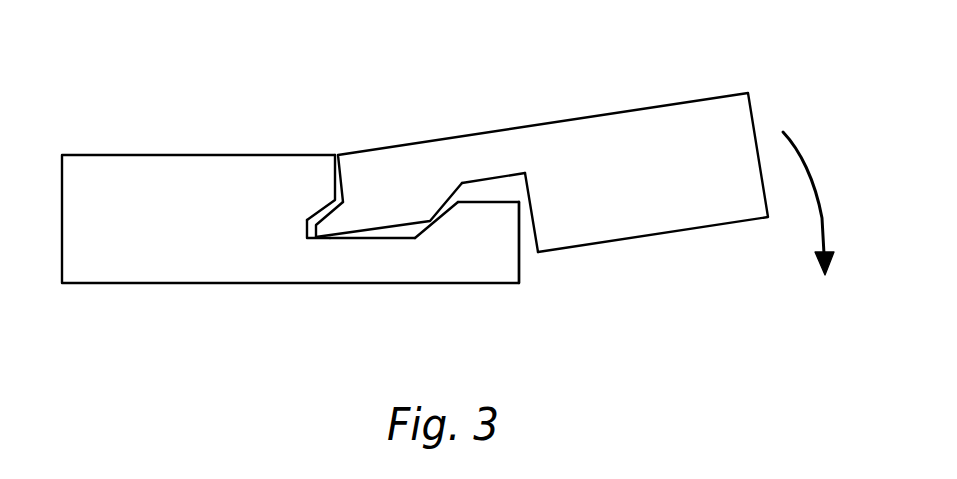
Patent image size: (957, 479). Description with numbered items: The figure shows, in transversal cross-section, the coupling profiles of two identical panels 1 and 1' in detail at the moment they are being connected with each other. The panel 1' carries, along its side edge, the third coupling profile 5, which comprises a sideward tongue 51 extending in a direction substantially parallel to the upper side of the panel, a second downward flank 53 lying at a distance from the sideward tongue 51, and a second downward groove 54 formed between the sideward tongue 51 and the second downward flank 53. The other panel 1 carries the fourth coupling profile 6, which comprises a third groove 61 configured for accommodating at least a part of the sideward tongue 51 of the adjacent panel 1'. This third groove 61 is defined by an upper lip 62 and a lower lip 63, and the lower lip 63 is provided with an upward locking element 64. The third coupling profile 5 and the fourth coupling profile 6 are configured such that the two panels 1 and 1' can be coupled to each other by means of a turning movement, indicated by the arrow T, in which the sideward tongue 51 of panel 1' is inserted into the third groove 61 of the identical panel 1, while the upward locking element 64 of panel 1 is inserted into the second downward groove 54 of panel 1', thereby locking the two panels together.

The panel 1 is at (290, 176).
The second identical panel 1' is at (553, 132).
The third coupling profile 5 is at (400, 165).
The sideward tongue 51 is at (368, 213).
The second downward flank 53 is at (527, 202).
The second downward groove 54 is at (497, 192).
The fourth coupling profile 6 is at (475, 262).
The third groove 61 is at (307, 228).
The upper lip 62 is at (310, 187).
The lower lip 63 is at (493, 243).
The upward locking element 64 is at (432, 222).
The arrow indicating turning movement T is at (815, 190).